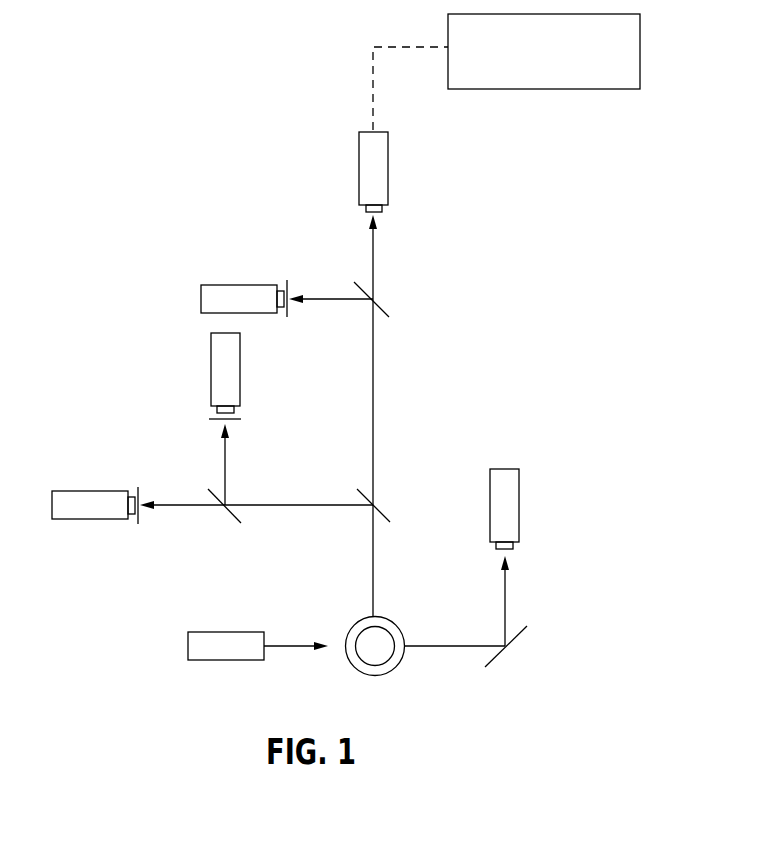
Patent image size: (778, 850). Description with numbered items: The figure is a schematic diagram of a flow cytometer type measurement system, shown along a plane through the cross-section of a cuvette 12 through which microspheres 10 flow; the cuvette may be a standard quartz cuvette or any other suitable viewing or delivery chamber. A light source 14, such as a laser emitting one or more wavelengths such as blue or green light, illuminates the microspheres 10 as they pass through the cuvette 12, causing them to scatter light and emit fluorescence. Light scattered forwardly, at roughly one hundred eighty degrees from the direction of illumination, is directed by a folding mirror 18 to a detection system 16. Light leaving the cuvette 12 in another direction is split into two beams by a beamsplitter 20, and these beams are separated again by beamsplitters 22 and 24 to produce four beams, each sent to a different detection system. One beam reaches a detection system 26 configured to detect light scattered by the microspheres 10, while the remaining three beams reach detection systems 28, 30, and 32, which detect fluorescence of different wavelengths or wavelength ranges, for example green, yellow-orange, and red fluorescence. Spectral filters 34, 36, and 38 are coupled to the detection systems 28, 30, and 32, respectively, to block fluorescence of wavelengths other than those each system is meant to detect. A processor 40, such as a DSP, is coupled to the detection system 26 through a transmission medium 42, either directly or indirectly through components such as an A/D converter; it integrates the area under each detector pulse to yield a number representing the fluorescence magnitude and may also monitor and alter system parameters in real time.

The microspheres 10 is at (378, 663).
The cuvette 12 is at (362, 673).
The light source 14 is at (188, 643).
The detection system 16 is at (519, 509).
The folding mirror 18 is at (521, 639).
The beamsplitter 20 is at (388, 515).
The beamsplitter 22 is at (231, 522).
The beamsplitter 24 is at (388, 311).
The detection system 26 is at (388, 166).
The detection system 28 is at (223, 285).
The detection system 30 is at (240, 375).
The detection system 32 is at (88, 491).
The spectral filter 34 is at (288, 290).
The spectral filter 36 is at (238, 420).
The spectral filter 38 is at (140, 497).
The processor 40 is at (556, 63).
The transmission medium 42 is at (373, 77).